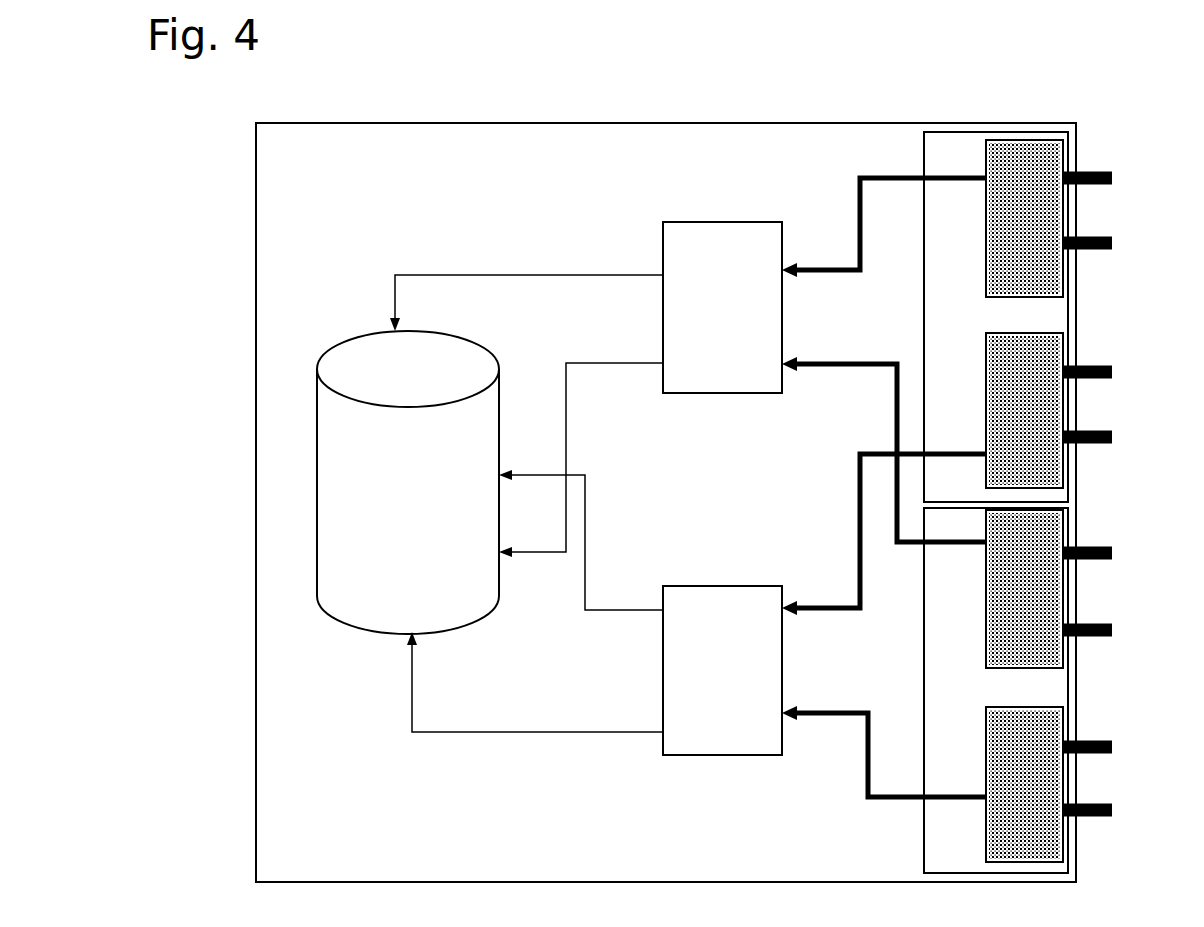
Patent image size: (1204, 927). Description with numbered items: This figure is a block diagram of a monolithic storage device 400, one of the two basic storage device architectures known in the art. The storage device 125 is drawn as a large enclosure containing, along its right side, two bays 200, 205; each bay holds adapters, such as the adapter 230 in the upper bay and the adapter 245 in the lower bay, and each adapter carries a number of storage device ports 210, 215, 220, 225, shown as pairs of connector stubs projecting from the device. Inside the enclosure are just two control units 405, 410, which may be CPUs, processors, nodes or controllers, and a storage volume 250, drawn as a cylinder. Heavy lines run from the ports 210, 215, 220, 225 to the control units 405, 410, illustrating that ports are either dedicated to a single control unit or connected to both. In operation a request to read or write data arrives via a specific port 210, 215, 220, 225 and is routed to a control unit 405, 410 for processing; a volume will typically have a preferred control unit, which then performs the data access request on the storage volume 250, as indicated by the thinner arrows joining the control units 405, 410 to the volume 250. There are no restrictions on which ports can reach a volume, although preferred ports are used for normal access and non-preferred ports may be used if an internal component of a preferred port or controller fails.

The monolithic storage device 400 is at (450, 95).
The storage device 125 is at (278, 145).
The bay 200 is at (918, 325).
The bay 205 is at (927, 683).
The storage device port 210 is at (1098, 167).
The storage device port 215 is at (1105, 355).
The storage device port 220 is at (1097, 547).
The storage device port 225 is at (1103, 727).
The adapter 230 is at (1006, 142).
The adapter 245 is at (1032, 707).
The storage volume 250 is at (352, 337).
The control unit 405 is at (677, 223).
The control unit 410 is at (693, 585).